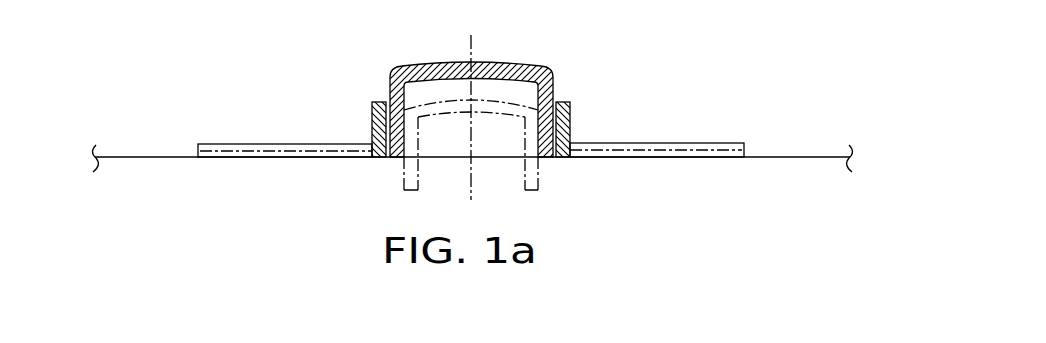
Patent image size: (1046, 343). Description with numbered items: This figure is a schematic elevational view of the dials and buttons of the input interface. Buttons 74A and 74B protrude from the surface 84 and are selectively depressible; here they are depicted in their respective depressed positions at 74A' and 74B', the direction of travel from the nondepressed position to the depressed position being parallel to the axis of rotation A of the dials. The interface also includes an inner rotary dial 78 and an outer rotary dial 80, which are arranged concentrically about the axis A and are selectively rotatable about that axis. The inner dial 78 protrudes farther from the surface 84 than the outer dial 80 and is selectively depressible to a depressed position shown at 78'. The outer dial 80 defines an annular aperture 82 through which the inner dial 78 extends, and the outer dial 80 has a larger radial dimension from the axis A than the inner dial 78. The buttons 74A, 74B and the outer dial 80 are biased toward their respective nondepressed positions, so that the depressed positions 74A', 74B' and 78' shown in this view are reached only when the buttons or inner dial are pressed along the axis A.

The surface 84 is at (790, 148).
The button 74A is at (285, 116).
The depressed position of button 74A 74A' is at (283, 113).
The button 74B is at (668, 113).
The depressed position of button 74B 74B' is at (656, 110).
The annular aperture 82 is at (390, 88).
The outer rotary dial 80 is at (569, 112).
The inner rotary dial 78 is at (507, 81).
The depressed position of inner dial 78 78' is at (471, 100).
The axis A is at (473, 55).